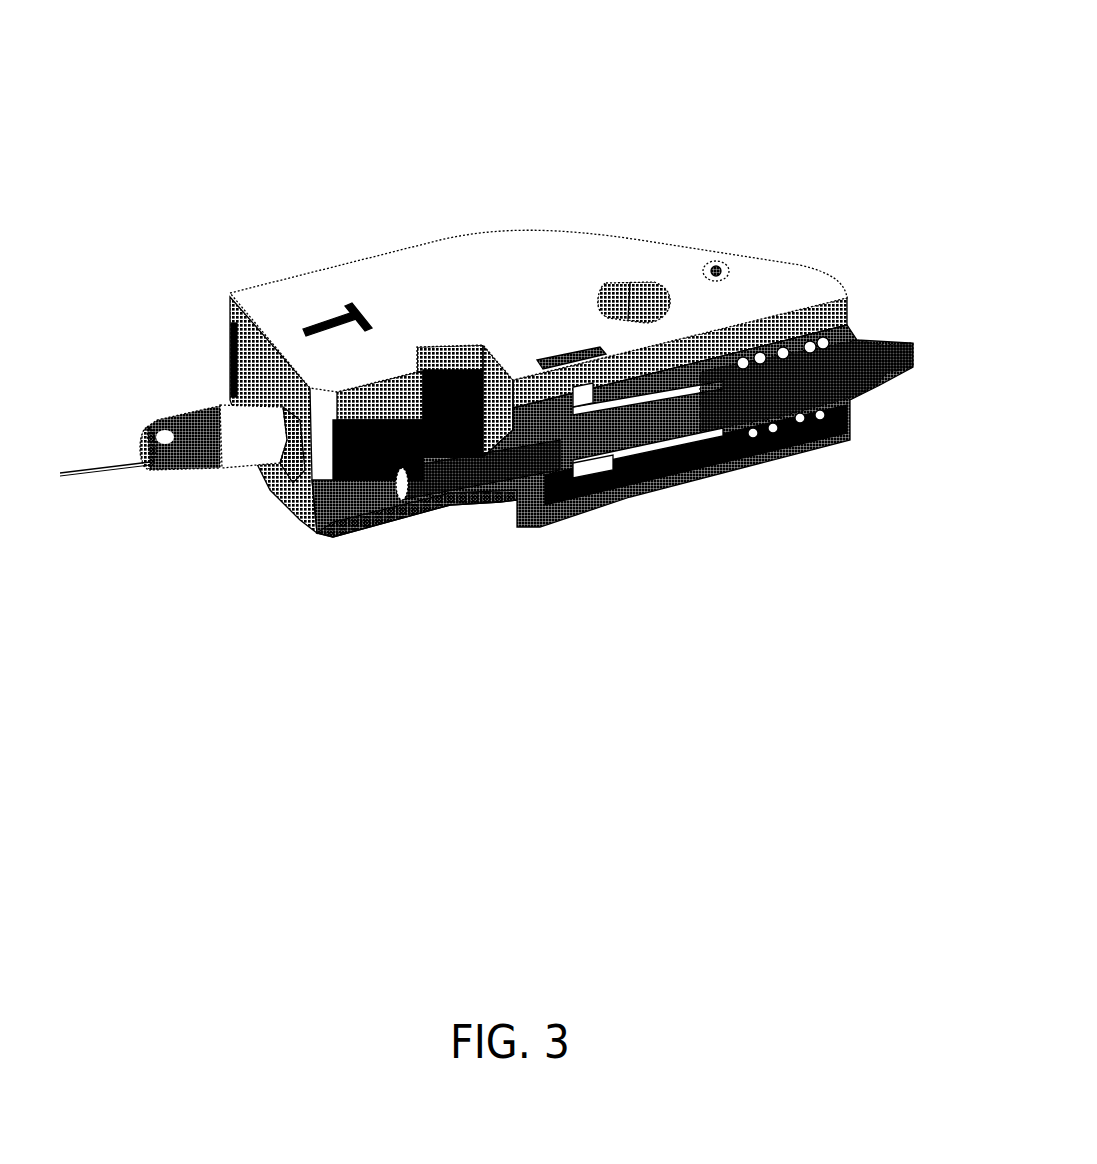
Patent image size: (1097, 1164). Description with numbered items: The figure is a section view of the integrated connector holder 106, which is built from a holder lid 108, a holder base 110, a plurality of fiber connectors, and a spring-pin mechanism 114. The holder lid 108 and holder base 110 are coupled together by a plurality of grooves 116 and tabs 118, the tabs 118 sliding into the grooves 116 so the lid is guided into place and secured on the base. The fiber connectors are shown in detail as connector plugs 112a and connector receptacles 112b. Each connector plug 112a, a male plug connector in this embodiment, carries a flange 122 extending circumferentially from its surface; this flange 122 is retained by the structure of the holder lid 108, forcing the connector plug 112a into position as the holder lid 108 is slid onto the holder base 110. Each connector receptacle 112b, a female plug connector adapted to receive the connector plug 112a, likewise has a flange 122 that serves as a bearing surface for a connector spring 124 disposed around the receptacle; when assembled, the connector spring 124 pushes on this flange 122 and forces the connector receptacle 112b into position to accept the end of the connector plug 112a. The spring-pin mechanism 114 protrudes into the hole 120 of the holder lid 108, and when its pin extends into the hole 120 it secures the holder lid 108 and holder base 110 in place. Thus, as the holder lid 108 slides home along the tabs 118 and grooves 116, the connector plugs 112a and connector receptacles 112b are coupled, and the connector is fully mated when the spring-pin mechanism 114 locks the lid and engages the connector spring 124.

The integrated connector holder 106 is at (499, 320).
The holder lid 108 is at (562, 354).
The holder base 110 is at (538, 517).
The connector plug 112a is at (592, 497).
The connector receptacle 112b is at (819, 398).
The spring-pin mechanism 114 is at (725, 272).
The grooves 116 is at (378, 482).
The tabs 118 is at (317, 491).
The hole 120 is at (798, 228).
The flange 122 is at (733, 448).
The connector spring 124 is at (816, 344).